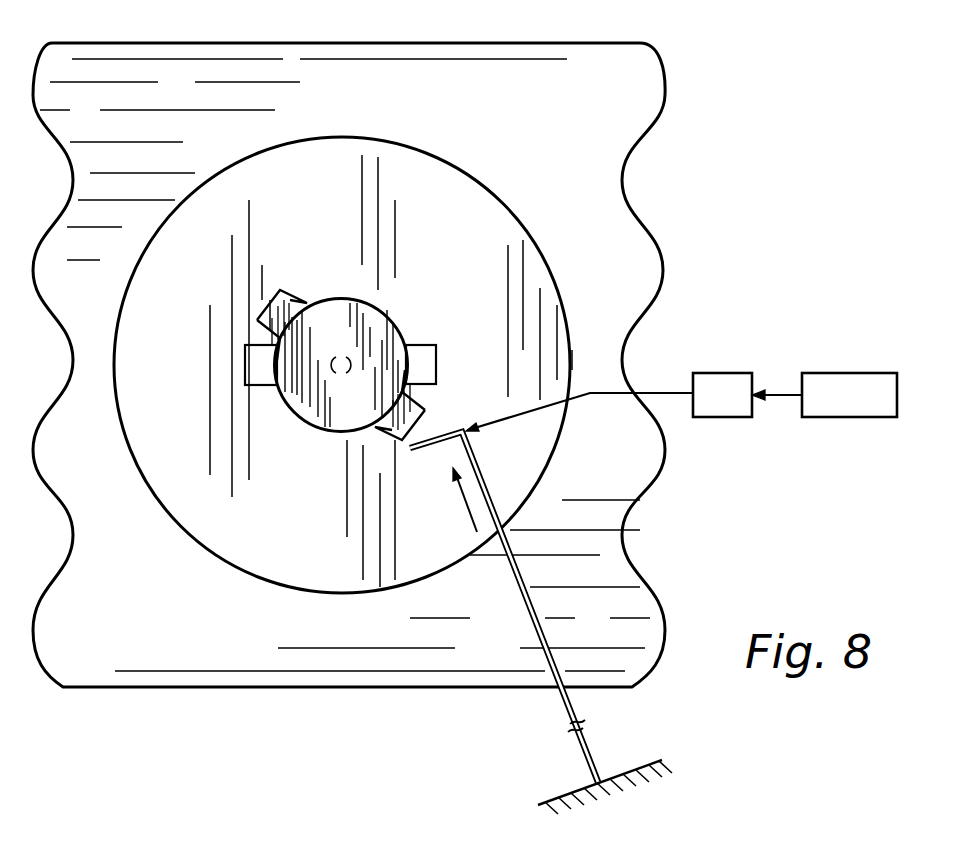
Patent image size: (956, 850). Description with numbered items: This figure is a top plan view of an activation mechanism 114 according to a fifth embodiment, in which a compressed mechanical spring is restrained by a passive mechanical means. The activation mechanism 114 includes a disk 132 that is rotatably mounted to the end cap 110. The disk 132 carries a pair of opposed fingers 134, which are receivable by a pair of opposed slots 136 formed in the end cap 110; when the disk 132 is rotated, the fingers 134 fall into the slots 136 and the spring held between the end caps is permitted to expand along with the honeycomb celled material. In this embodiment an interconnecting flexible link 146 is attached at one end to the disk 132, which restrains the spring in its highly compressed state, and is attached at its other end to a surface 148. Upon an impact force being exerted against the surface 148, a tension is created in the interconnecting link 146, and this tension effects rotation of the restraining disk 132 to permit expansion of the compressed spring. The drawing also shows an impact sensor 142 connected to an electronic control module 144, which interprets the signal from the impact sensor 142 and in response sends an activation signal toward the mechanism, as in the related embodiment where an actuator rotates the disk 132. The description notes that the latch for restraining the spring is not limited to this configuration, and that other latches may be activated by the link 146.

The end cap 110 is at (615, 110).
The activation mechanism 114 is at (180, 392).
The disk 132 is at (387, 307).
The fingers 134 is at (288, 300).
The slots 136 is at (258, 363).
The impact sensor 142 is at (850, 373).
The electronic control module 144 is at (723, 373).
The interconnecting flexible link 146 is at (483, 478).
The surface 148 is at (562, 797).